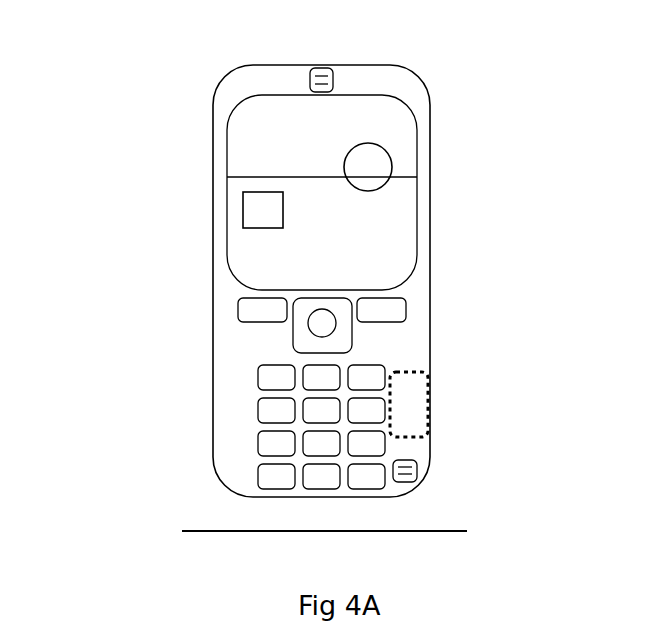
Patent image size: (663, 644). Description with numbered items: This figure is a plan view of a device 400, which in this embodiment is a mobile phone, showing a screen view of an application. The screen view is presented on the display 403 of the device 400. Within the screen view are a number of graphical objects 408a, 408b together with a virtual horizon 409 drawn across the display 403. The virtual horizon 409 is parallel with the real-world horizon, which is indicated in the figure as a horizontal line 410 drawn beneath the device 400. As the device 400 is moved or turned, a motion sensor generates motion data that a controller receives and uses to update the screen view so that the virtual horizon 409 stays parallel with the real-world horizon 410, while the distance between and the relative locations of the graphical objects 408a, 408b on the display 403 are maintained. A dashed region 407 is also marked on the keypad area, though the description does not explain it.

The device 400 is at (226, 60).
The display 403 is at (405, 103).
The virtual horizon 409 is at (235, 177).
The graphical object 408a is at (243, 207).
The graphical object 408b is at (392, 167).
The dashed region 407 is at (428, 404).
The horizontal line 410 is at (192, 522).